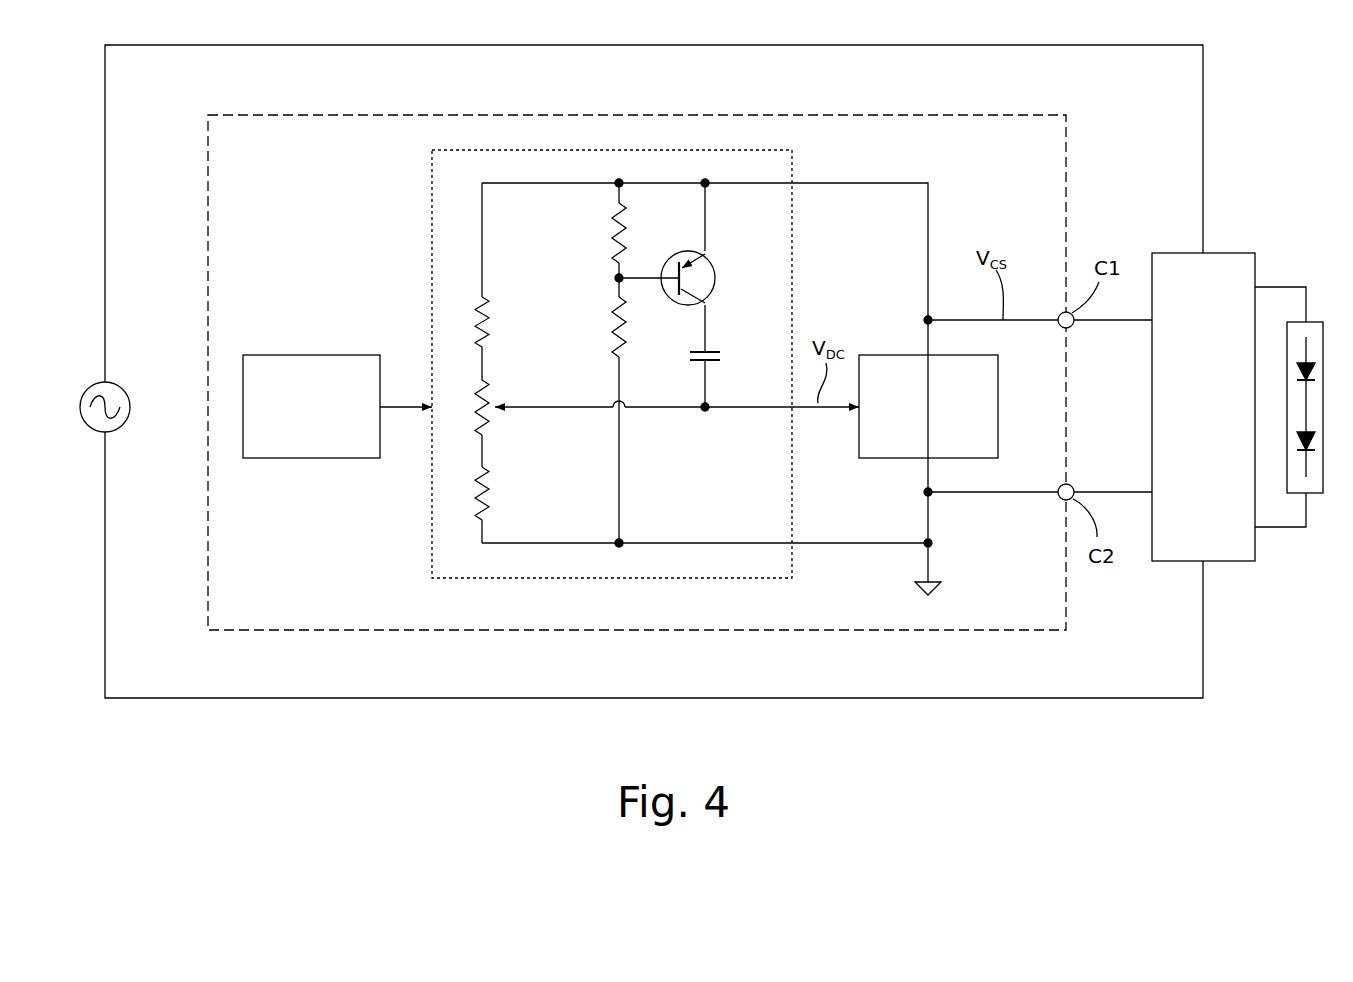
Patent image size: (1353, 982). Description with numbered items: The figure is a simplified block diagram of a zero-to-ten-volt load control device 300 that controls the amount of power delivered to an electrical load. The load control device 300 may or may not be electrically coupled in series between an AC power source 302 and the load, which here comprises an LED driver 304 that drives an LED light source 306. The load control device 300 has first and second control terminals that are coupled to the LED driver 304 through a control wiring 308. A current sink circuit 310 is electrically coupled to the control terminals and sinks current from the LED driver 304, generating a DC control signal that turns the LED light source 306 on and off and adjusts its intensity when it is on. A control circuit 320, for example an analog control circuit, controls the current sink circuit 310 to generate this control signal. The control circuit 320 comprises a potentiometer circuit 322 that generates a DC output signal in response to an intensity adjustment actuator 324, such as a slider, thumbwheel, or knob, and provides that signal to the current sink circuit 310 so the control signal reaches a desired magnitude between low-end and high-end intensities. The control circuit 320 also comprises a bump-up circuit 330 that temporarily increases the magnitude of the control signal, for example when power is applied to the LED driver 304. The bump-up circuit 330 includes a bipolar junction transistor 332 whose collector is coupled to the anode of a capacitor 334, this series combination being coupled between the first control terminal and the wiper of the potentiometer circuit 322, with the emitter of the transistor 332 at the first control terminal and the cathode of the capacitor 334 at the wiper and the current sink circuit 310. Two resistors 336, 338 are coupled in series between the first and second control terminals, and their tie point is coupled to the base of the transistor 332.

The load control device 300 is at (1067, 178).
The AC power source 302 is at (107, 425).
The LED driver 304 is at (1225, 295).
The LED light source 306 is at (1313, 479).
The control wiring 308 is at (1089, 326).
The current sink circuit 310 is at (880, 373).
The control circuit 320 is at (430, 250).
The potentiometer circuit 322 is at (530, 432).
The intensity adjustment actuator 324 is at (358, 373).
The bump-up circuit 330 is at (538, 264).
The bipolar junction transistor 332 is at (718, 283).
The capacitor 334 is at (712, 352).
The resistor 336 is at (614, 250).
The resistor 338 is at (612, 333).